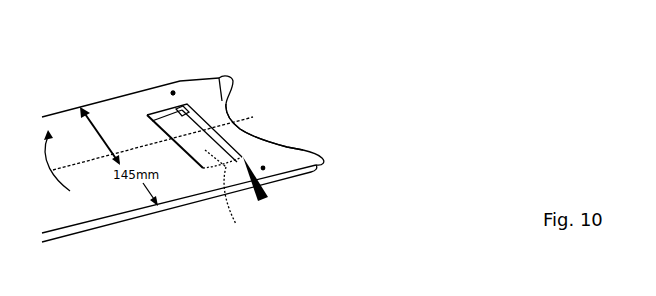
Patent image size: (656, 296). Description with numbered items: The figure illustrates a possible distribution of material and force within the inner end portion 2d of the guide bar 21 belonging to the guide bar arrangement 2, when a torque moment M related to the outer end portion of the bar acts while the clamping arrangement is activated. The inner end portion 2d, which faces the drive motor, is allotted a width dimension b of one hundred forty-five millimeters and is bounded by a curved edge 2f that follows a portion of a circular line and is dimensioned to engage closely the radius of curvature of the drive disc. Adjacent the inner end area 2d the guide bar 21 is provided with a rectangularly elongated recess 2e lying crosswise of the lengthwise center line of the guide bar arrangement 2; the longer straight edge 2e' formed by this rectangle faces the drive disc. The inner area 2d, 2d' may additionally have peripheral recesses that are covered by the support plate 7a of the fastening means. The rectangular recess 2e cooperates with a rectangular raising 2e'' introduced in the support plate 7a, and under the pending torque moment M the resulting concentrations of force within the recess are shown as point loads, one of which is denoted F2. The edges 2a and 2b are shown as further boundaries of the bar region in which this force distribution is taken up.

The guide bar arrangement 2 is at (129, 151).
The plate end edge 2a is at (336, 95).
The plate top edge 2b is at (83, 107).
The inner end portion 2d is at (192, 199).
The inner area 2d' is at (179, 58).
The rectangular recess 2e is at (201, 104).
The straight edge 2e' is at (236, 103).
The rectangular raising 2e'' is at (231, 218).
The support plate 7a is at (248, 215).
The curved edge 2f is at (260, 136).
The guide bar 21 is at (238, 208).
The point load F2 is at (271, 187).
The torque moment M is at (45, 160).
The width dimension b is at (98, 136).